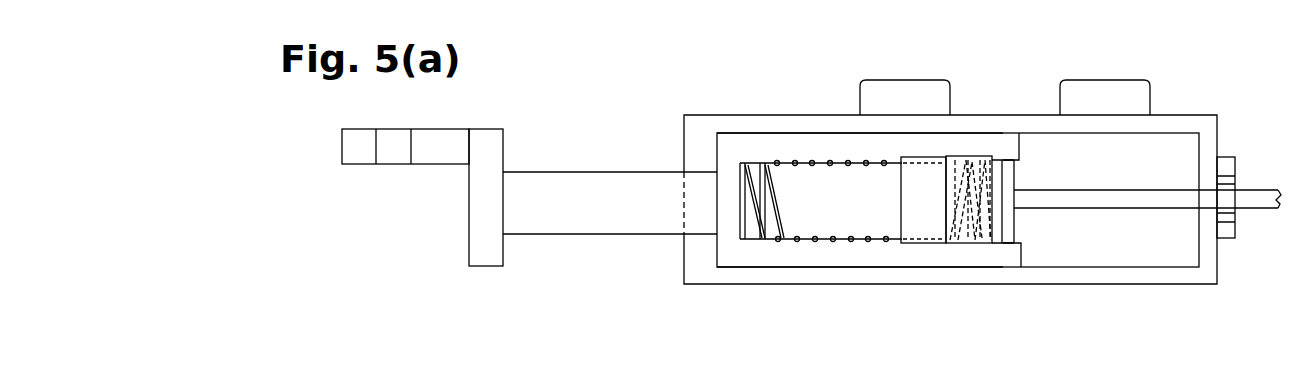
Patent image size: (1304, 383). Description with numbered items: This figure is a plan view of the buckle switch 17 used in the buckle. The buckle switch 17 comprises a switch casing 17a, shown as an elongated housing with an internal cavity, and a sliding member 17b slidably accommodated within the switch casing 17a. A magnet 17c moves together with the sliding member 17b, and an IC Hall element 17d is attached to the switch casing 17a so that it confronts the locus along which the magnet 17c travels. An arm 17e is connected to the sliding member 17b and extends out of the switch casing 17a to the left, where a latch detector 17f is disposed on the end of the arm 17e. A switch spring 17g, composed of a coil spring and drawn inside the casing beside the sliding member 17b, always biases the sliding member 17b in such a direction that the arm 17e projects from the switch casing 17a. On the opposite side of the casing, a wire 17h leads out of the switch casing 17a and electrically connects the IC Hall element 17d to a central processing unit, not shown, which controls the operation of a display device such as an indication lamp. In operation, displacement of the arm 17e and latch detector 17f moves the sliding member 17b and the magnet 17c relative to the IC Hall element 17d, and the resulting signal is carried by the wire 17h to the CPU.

The buckle switch 17 is at (591, 272).
The switch casing 17a is at (1052, 280).
The sliding member 17b is at (795, 141).
The magnet 17c is at (896, 247).
The IC Hall element 17d is at (1017, 178).
The arm 17e is at (594, 183).
The latch detector 17f is at (364, 159).
The switch spring 17g is at (766, 246).
The wire 17h is at (1153, 200).